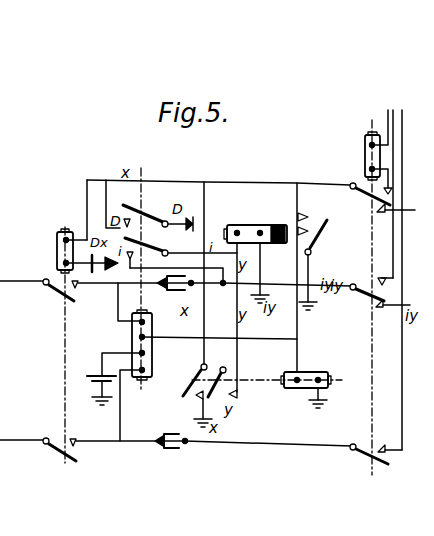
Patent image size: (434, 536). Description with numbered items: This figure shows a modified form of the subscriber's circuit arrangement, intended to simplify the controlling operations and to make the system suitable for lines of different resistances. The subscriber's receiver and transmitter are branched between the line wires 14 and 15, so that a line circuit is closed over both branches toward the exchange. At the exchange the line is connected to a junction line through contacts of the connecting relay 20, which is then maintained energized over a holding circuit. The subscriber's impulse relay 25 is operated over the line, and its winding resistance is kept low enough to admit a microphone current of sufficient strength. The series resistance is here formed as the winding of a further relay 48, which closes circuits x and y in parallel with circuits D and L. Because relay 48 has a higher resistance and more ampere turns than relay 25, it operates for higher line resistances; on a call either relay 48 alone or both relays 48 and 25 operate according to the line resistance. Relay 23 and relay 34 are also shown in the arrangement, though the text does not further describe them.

The line wire 14 is at (39, 290).
The line wire 15 is at (38, 442).
The connecting relay 20 is at (57, 252).
The relay 23 is at (249, 220).
The subscriber's impulse relay 25 is at (132, 341).
The relay 34 is at (365, 157).
The relay 48 is at (313, 367).